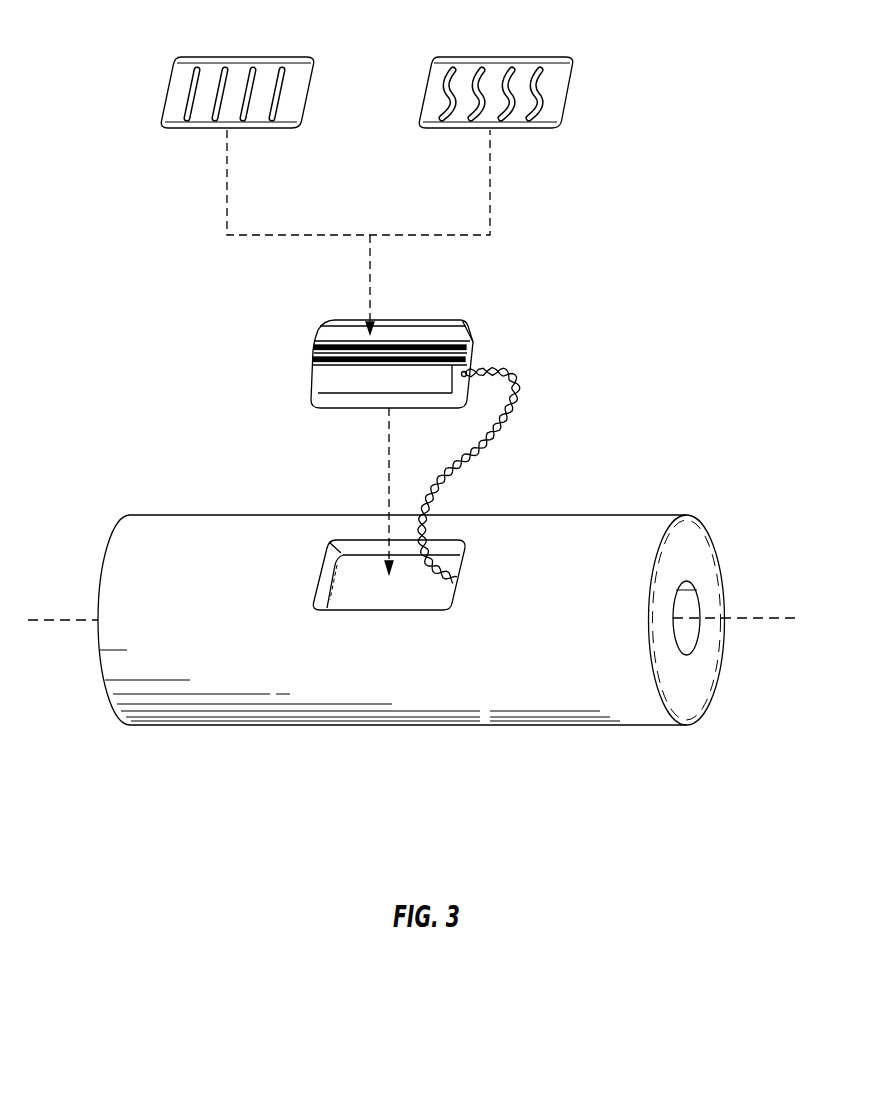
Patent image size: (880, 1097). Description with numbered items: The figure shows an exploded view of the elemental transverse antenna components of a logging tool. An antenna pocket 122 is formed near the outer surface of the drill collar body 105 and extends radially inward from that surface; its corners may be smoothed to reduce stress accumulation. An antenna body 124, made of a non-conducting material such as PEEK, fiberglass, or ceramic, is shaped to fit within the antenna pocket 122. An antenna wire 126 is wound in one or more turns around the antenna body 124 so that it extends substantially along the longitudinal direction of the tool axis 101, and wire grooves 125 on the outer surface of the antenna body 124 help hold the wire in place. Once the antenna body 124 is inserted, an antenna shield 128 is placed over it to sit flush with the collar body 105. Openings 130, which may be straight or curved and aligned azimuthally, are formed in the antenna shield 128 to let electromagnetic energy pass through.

The tool axis 101 is at (747, 620).
The drill collar body 105 is at (523, 523).
The antenna pocket 122 is at (362, 565).
The antenna body 124 is at (433, 323).
The wire grooves 125 is at (350, 345).
The antenna wire 126 is at (517, 385).
The antenna shield 128 is at (268, 63).
The openings 130 is at (227, 72).